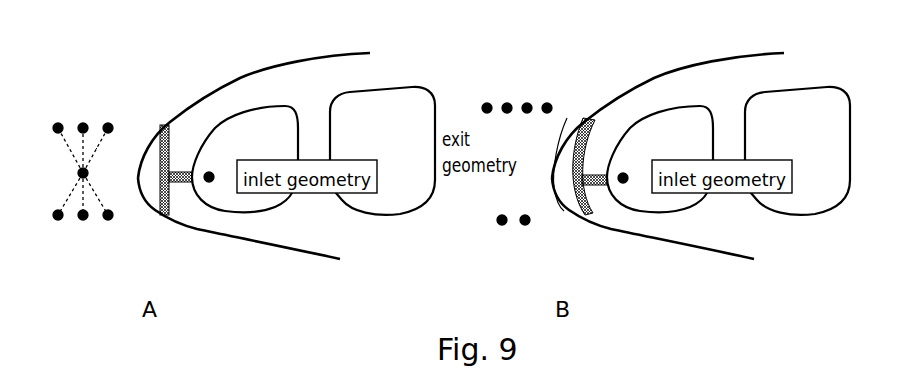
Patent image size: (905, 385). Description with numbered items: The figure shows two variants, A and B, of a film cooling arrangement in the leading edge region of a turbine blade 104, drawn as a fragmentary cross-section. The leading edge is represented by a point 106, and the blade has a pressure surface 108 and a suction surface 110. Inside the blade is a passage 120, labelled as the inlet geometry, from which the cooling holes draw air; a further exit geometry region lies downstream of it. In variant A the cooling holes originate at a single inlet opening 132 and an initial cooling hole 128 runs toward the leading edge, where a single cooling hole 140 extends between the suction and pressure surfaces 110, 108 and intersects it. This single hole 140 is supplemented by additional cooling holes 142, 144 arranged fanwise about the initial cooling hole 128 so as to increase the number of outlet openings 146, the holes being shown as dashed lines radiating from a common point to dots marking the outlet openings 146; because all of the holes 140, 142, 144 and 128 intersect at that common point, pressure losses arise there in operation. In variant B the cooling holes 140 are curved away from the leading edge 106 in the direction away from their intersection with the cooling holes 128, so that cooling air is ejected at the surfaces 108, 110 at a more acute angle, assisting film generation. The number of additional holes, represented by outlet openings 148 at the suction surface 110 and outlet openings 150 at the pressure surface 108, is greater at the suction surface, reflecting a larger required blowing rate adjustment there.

The turbine blade 104 is at (498, 159).
The leading edge 106 is at (542, 182).
The pressure surface 108 is at (293, 251).
The suction surface 110 is at (240, 78).
The passage 120 is at (277, 150).
The initial cooling hole 128 is at (72, 193).
The single inlet opening 132 is at (209, 182).
The single cooling hole 140 is at (83, 145).
The additional cooling hole 142 is at (67, 146).
The additional cooling hole 144 is at (96, 148).
The outlet openings 146 is at (83, 123).
The outlet openings 148 is at (547, 103).
The outlet openings 150 is at (525, 225).